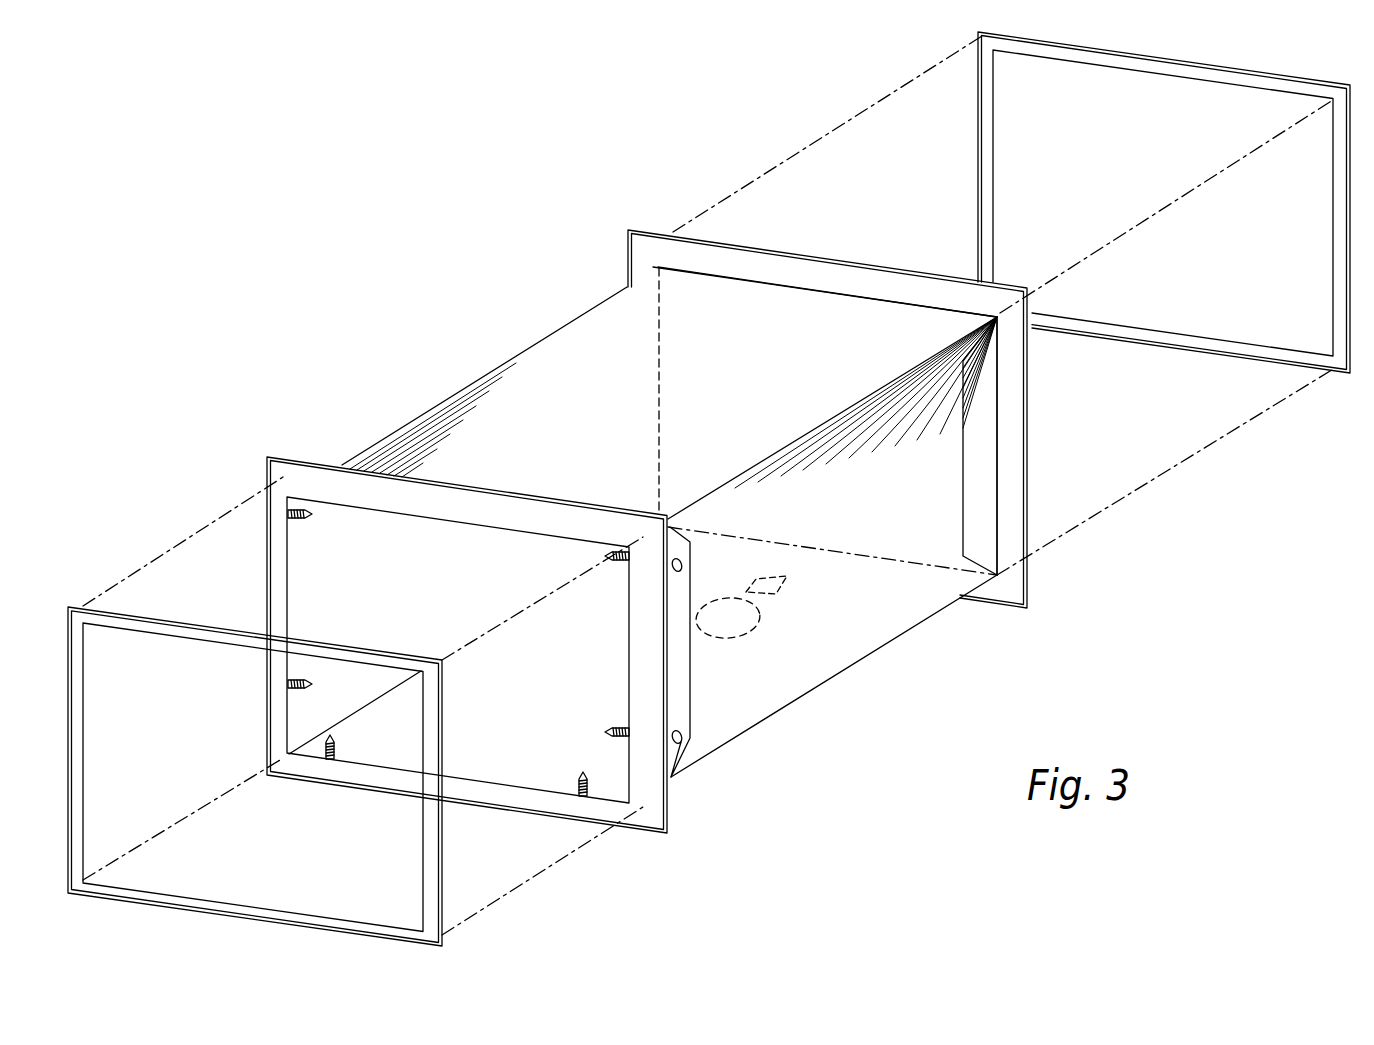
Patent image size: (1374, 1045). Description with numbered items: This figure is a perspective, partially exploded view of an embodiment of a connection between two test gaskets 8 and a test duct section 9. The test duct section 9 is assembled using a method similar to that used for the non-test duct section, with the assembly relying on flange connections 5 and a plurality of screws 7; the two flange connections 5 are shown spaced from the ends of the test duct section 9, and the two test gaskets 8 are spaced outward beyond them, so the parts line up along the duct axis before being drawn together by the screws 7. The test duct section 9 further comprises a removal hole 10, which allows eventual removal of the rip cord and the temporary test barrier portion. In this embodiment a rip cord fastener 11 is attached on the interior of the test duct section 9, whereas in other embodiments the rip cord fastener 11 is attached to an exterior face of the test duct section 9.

The flange connection 5 is at (310, 480).
The screw 7 is at (685, 746).
The test gasket 8 is at (442, 883).
The test duct section 9 is at (618, 353).
The removal hole 10 is at (750, 628).
The rip cord fastener 11 is at (778, 587).